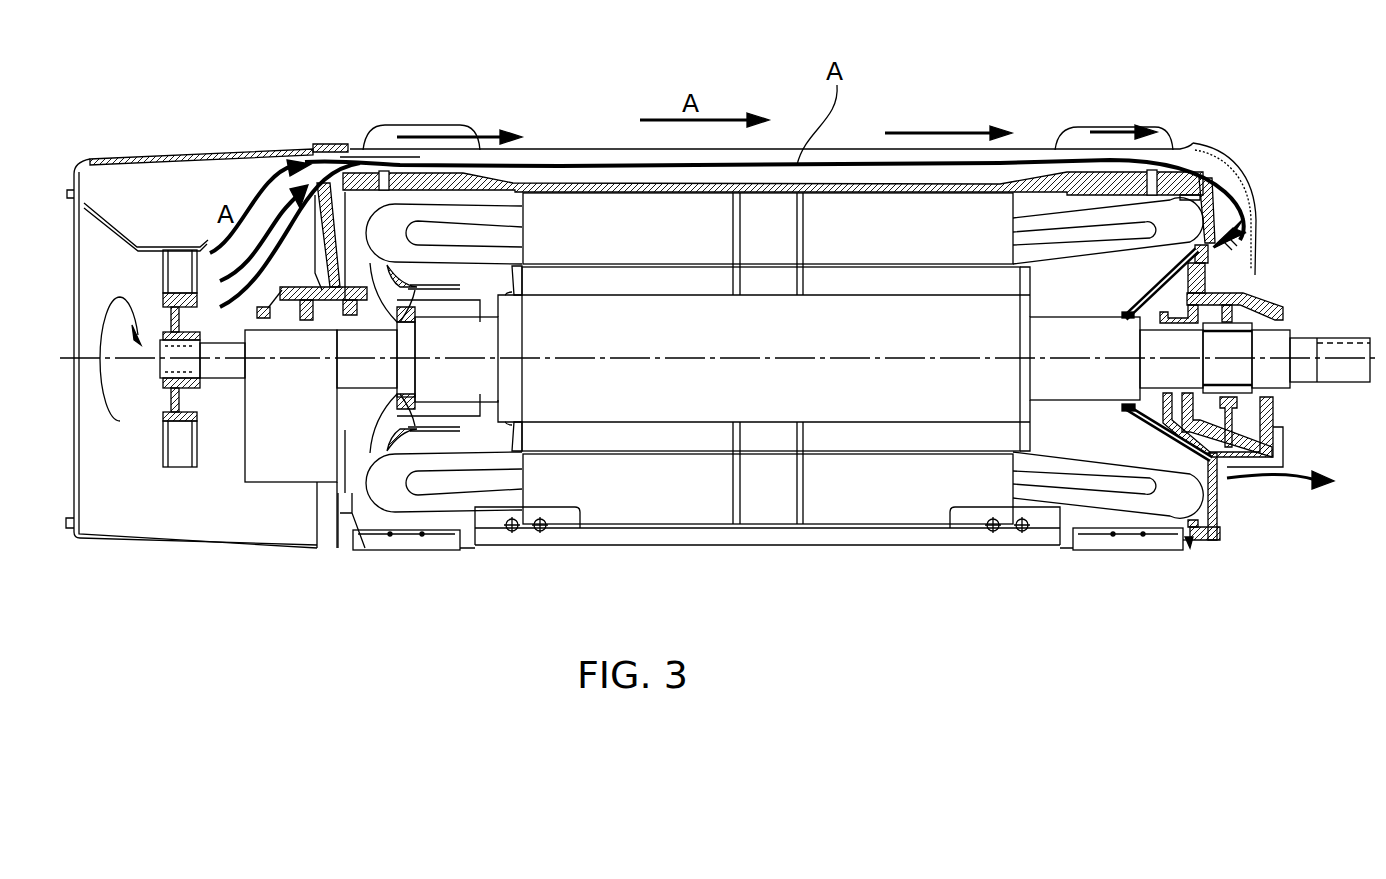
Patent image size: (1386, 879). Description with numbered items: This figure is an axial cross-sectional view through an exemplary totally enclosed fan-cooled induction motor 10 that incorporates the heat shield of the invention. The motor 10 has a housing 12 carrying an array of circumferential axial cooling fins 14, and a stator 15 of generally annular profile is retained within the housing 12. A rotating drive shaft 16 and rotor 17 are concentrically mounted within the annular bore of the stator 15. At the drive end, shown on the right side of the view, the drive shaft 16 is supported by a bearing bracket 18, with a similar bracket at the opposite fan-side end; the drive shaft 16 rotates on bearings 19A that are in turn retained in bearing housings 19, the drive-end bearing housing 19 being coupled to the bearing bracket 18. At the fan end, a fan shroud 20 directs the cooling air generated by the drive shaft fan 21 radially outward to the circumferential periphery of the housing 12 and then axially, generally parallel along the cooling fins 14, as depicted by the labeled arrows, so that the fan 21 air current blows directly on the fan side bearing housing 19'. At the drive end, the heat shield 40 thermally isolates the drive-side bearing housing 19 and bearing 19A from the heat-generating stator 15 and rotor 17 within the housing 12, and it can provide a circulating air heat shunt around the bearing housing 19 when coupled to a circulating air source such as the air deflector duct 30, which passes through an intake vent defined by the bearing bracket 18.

The induction motor 10 is at (982, 548).
The housing 12 is at (663, 550).
The cooling fins 14 is at (538, 150).
The stator 15 is at (620, 490).
The drive shaft 16 is at (880, 400).
The rotor 17 is at (700, 437).
The bearing bracket 18 is at (1224, 283).
The bearing housing 19 is at (1202, 400).
The bearings 19A is at (1245, 323).
The fan side bearing housing 19' is at (306, 420).
The fan shroud 20 is at (253, 157).
The fan 21 is at (178, 262).
The air deflector duct 30 is at (1220, 148).
The heat shield 40 is at (1160, 445).